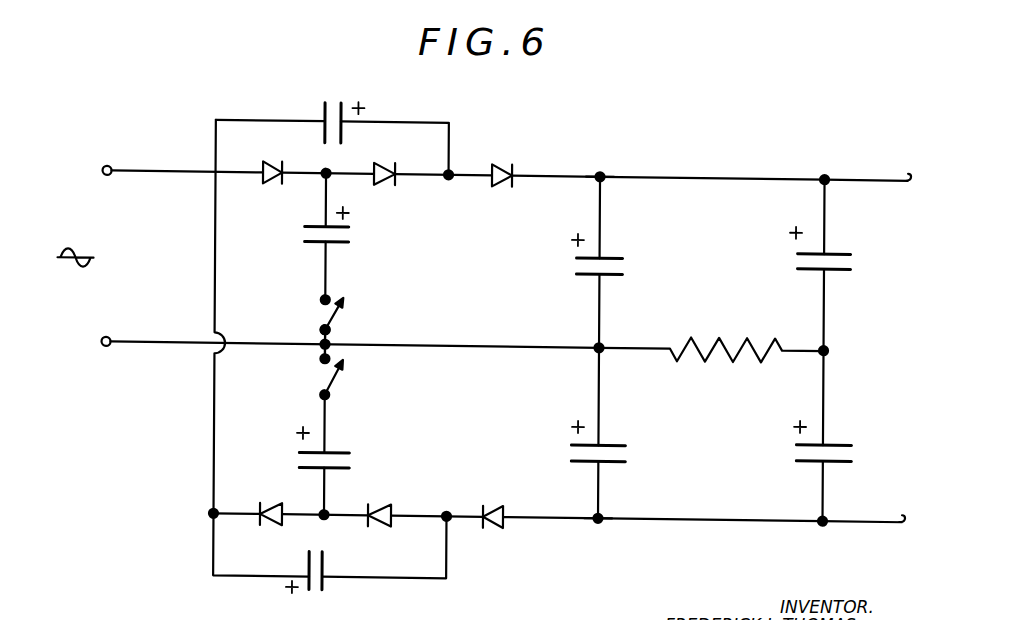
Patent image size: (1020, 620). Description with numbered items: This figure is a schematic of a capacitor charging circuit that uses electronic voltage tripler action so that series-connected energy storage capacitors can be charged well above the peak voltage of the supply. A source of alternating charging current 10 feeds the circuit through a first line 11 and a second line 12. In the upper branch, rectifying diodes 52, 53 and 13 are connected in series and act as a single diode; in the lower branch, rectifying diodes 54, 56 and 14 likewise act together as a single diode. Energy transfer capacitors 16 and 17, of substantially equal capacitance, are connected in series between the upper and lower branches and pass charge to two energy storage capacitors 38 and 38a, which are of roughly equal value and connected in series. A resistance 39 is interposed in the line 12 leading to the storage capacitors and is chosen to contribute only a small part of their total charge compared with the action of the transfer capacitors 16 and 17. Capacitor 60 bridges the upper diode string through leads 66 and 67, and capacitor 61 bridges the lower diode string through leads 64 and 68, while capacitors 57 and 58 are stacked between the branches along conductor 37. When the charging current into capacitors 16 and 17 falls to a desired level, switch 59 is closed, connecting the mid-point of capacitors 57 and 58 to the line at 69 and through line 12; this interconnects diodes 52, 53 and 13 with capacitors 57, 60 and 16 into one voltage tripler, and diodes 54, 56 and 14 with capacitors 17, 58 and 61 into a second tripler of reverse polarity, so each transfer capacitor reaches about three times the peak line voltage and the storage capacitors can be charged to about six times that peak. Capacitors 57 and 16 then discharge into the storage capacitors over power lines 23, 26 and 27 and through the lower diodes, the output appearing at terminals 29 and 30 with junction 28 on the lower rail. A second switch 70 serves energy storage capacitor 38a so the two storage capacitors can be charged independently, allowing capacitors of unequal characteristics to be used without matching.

The source of alternating charging current 10 is at (74, 275).
The line 11 is at (171, 155).
The line 12 is at (151, 345).
The rectifying diode 13 is at (500, 184).
The rectifying diode 14 is at (494, 529).
The energy transfer capacitor 16 is at (613, 264).
The energy transfer capacitor 17 is at (620, 453).
The power line 23 is at (583, 164).
The power line 26 is at (755, 175).
The power line 27 is at (826, 390).
The junction 28 is at (573, 519).
The output terminal 29 is at (884, 174).
The output terminal 30 is at (860, 528).
The conductor 37 is at (214, 470).
The energy storage capacitor 38 is at (848, 259).
The energy storage capacitor 38a is at (850, 449).
The resistance 39 is at (718, 334).
The rectifying diode 52 is at (278, 143).
The rectifying diode 53 is at (383, 182).
The rectifying diode 54 is at (279, 500).
The rectifying diode 56 is at (376, 522).
The capacitor 57 is at (306, 236).
The capacitor 58 is at (353, 463).
The switch 59 is at (323, 320).
The capacitor 60 is at (338, 107).
The capacitor 61 is at (312, 594).
The lead 64 is at (260, 581).
The lead 66 is at (269, 123).
The lead 67 is at (432, 102).
The lead 68 is at (431, 581).
The connection point 69 is at (323, 345).
The second switch 70 is at (323, 392).